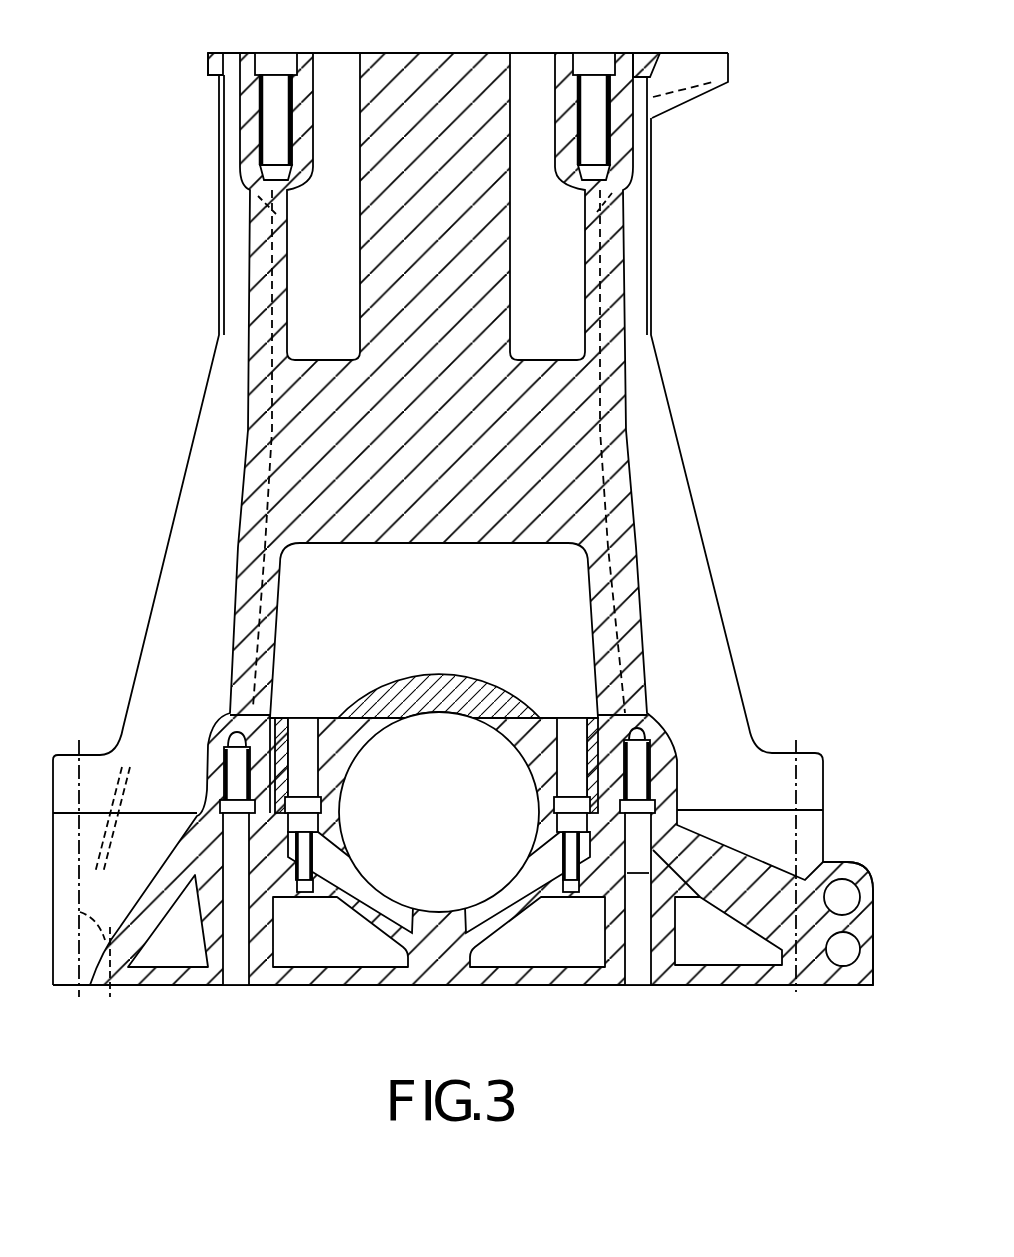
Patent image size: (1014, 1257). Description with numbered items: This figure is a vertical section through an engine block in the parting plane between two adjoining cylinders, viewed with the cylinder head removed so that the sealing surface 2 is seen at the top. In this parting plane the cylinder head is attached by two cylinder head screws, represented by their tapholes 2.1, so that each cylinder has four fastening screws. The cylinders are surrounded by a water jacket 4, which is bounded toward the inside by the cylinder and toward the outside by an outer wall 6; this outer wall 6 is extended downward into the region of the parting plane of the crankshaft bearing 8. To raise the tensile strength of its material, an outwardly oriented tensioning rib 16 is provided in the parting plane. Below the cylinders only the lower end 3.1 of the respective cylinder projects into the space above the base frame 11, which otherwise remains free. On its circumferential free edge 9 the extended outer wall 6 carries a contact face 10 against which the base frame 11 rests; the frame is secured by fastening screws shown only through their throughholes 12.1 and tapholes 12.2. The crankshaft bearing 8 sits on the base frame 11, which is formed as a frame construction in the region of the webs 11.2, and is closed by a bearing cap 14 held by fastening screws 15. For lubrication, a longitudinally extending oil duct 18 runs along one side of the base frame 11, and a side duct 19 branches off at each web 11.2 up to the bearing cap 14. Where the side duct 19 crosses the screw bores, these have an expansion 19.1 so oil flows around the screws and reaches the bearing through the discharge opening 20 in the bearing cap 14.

The sealing surface 2 is at (466, 53).
The tapholes 2.1 is at (277, 64).
The water jacket 4 is at (550, 238).
The tensioning rib 16 is at (608, 261).
The outer wall 6 is at (667, 382).
The lower end of the cylinder 3.1 is at (330, 546).
The bearing cap 14 is at (460, 683).
The fastening screws of the bearing cap 15 is at (310, 718).
The circumferential free edge 9 is at (657, 727).
The discharge opening 20 is at (532, 796).
The contact face 10 is at (700, 810).
The base frame 11 is at (838, 836).
The crankshaft bearing 8 is at (460, 883).
The expansion 19.1 is at (637, 862).
The side duct 19 is at (745, 900).
The tapholes for fastening screws 12.2 is at (437, 887).
The throughholes for fastening screws 12.1 is at (233, 970).
The webs 11.2 is at (427, 973).
The oil duct 18 is at (840, 952).